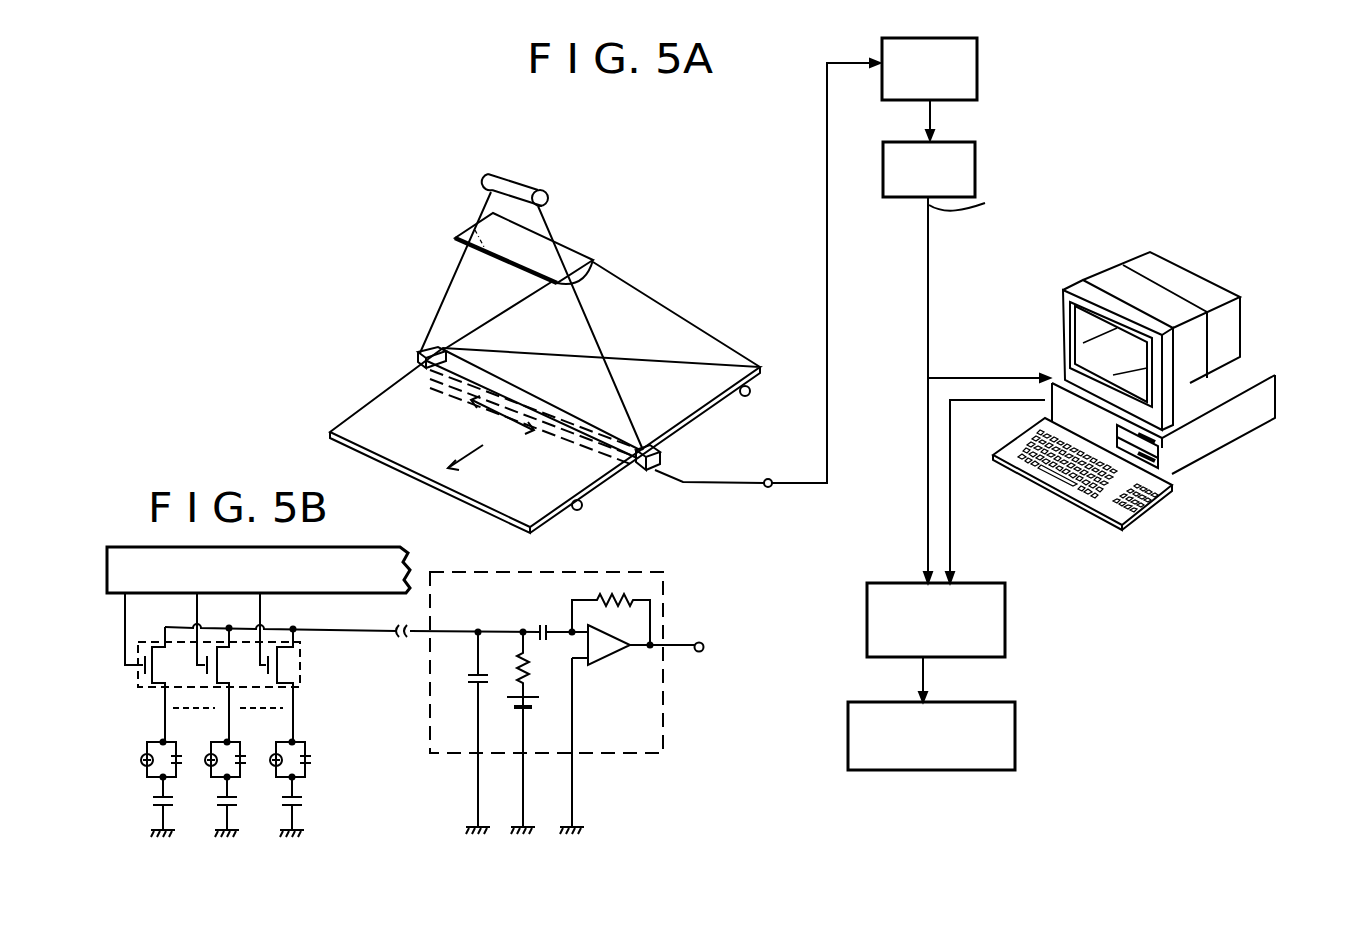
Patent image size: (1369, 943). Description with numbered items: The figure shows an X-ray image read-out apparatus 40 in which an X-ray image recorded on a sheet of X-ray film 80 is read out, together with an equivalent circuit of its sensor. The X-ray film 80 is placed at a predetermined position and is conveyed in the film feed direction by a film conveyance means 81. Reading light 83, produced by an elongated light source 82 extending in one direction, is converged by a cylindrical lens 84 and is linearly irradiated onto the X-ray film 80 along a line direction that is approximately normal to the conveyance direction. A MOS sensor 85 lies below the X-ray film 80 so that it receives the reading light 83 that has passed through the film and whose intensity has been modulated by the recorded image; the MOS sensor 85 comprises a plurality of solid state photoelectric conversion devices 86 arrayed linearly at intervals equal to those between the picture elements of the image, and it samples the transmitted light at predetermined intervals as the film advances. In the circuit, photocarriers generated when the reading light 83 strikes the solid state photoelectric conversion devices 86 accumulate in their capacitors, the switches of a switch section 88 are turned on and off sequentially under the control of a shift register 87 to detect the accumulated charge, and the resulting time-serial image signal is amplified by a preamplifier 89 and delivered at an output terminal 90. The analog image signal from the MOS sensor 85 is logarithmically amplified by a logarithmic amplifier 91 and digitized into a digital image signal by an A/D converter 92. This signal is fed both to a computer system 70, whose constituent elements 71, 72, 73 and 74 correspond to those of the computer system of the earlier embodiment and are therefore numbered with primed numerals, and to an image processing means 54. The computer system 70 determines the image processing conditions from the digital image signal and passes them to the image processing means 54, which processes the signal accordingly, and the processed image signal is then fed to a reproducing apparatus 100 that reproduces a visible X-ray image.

In FIG. 5A, the image reading apparatus 40 is at (616, 230).
In FIG. 5A, the X-ray film 80 is at (730, 348).
In FIG. 5A, the film conveyance means 81 is at (750, 393).
In FIG. 5A, the elongated light source 82 is at (545, 191).
In FIG. 5A, the reading light 83 is at (540, 222).
In FIG. 5A, the cylindrical lens 84 is at (590, 254).
In FIG. 5A, the MOS sensor 85 is at (660, 460).
In FIG. 5A, the logarithmic amplifier 91 is at (977, 67).
In FIG. 5A, the A/D converter 92 is at (975, 163).
In FIG. 5A, the computer system 70 is at (1163, 381).
In FIG. 5A, the keyboard 71 is at (1165, 487).
In FIG. 5A, the main body 72 is at (1253, 374).
In FIG. 5A, the disk drives 73 is at (1170, 468).
In FIG. 5A, the display 74 is at (1083, 321).
In FIG. 5A, the image processing means 54 is at (1005, 583).
In FIG. 5A, the reproducing apparatus 100 is at (1015, 738).
In FIG. 5B, the shift register 87 is at (118, 594).
In FIG. 5B, the switch section 88 is at (138, 678).
In FIG. 5B, the solid state photoelectric conversion devices 86 is at (140, 782).
In FIG. 5B, the preamplifier 89 is at (613, 753).
In FIG. 5B, the output terminal 90 is at (704, 646).